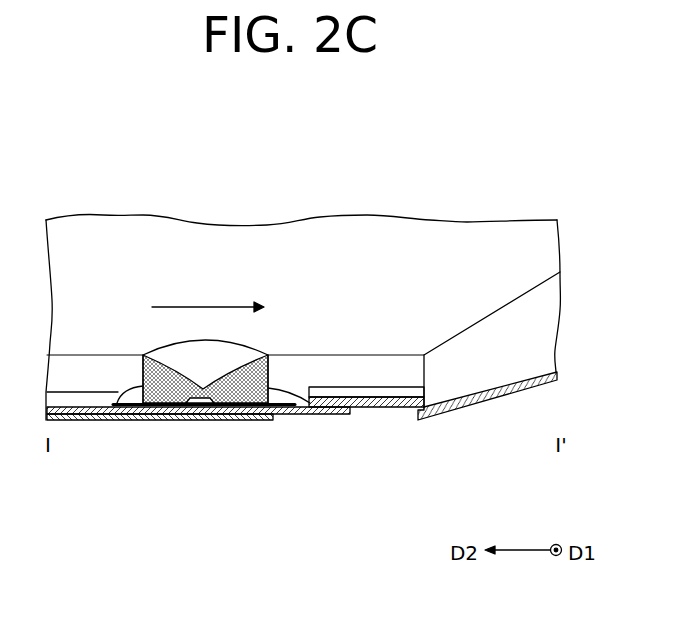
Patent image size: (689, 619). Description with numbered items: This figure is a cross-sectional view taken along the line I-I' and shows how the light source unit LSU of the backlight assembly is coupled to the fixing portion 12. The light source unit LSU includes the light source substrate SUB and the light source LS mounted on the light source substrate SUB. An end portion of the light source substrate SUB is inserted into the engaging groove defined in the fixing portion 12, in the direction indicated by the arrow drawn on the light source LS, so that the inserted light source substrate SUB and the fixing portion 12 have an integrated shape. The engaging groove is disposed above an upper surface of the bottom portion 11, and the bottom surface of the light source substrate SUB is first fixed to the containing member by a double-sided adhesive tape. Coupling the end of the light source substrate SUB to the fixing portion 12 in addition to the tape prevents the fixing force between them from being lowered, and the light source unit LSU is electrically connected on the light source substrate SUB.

The bottom portion 11 is at (103, 421).
The fixing portion 12 is at (385, 408).
The light source LS is at (237, 388).
The light source substrate SUB is at (318, 415).
The light source unit LSU is at (198, 441).